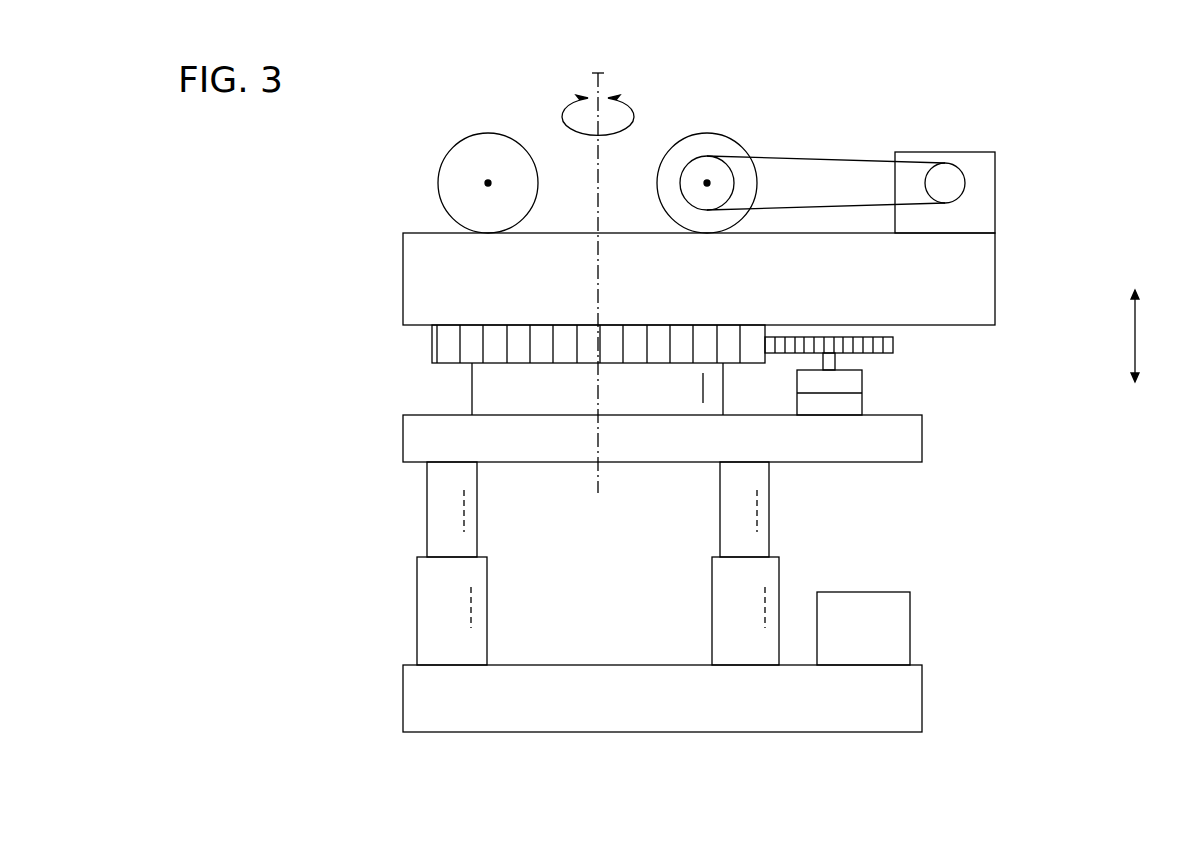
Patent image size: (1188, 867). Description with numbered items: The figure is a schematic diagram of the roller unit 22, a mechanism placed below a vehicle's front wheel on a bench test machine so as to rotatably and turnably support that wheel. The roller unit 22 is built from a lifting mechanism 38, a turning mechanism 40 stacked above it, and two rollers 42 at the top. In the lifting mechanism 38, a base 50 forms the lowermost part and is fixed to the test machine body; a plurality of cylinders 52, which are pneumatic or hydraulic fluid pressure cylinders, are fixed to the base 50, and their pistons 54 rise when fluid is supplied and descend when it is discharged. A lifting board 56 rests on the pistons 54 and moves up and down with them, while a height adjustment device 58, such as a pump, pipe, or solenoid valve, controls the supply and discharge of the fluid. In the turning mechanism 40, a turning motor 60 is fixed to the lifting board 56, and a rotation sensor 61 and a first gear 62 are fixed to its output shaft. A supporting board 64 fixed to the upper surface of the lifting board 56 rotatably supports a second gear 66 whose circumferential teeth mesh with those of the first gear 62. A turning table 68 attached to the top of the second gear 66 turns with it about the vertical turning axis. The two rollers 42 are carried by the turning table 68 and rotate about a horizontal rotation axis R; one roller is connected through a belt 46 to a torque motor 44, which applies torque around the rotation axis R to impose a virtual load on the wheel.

The roller unit 22 is at (320, 139).
The lifting mechanism 38 is at (329, 420).
The turning mechanism 40 is at (329, 235).
The rollers 42 is at (487, 133).
The torque motor 44 is at (997, 193).
The belt 46 is at (812, 158).
The base 50 is at (432, 697).
The cylinder 52 is at (440, 600).
The piston 54 is at (440, 508).
The lifting board 56 is at (425, 441).
The height adjustment device 58 is at (912, 631).
The turning motor 60 is at (864, 383).
The rotation sensor 61 is at (835, 405).
The first gear 62 is at (895, 346).
The supporting board 64 is at (495, 388).
The second gear 66 is at (446, 346).
The turning table 68 is at (997, 279).
The rotation axis R is at (485, 183).